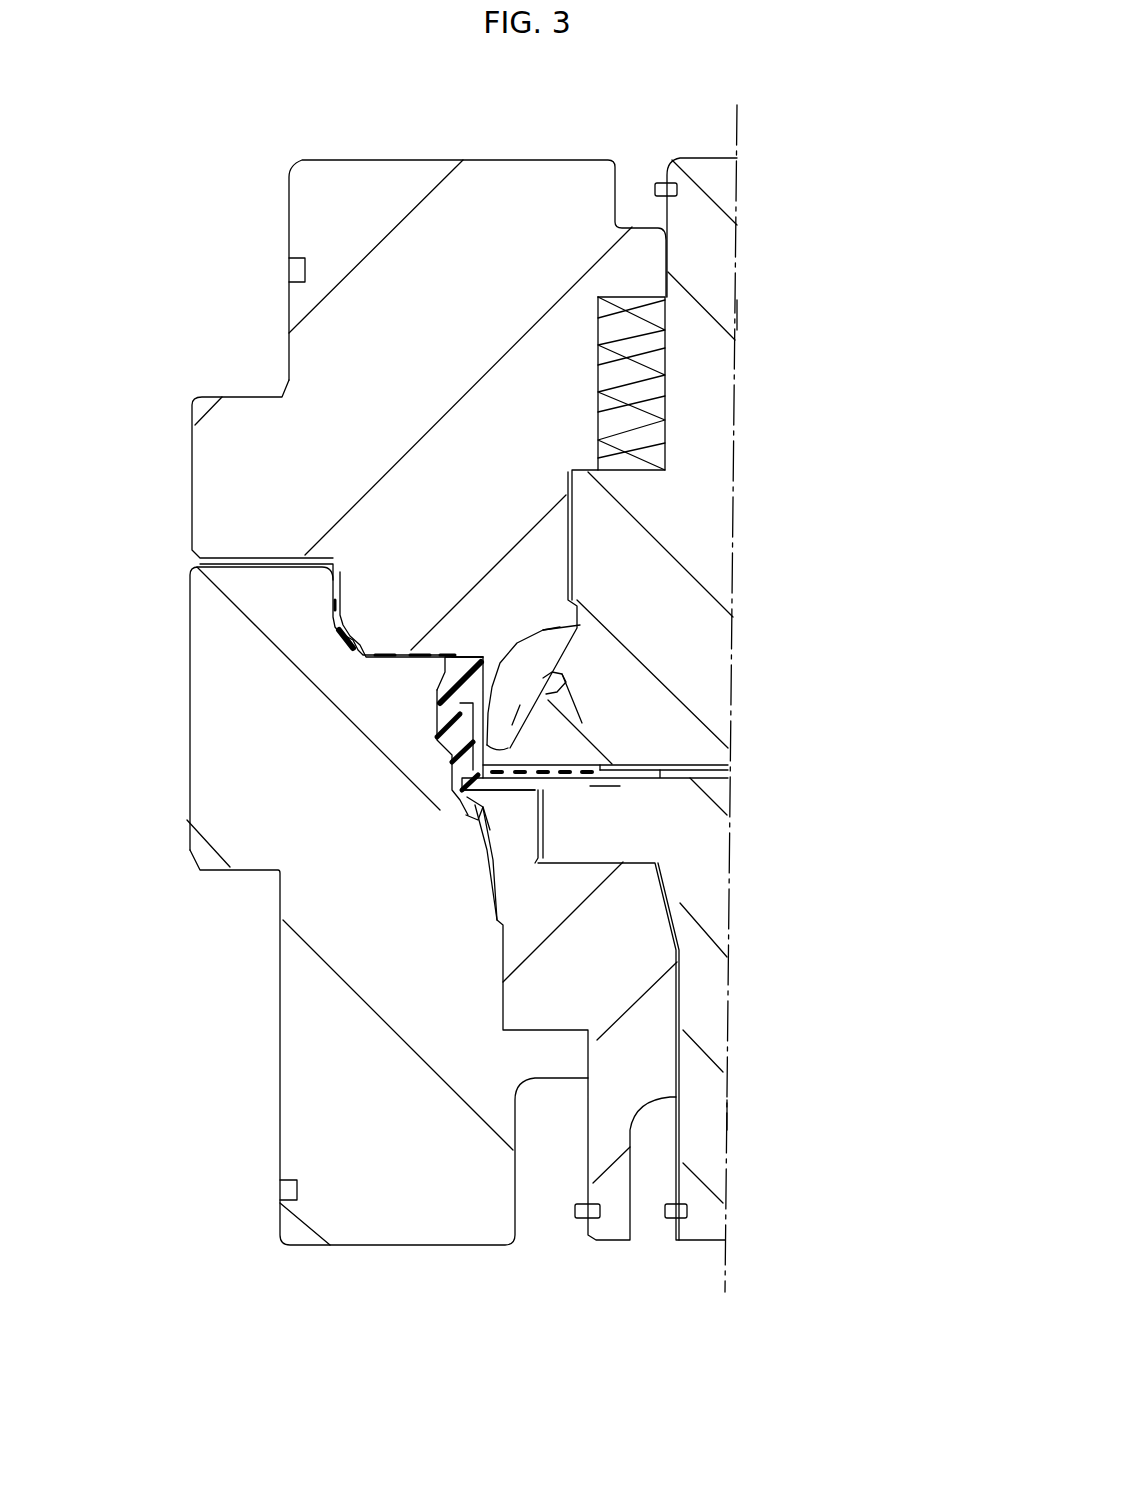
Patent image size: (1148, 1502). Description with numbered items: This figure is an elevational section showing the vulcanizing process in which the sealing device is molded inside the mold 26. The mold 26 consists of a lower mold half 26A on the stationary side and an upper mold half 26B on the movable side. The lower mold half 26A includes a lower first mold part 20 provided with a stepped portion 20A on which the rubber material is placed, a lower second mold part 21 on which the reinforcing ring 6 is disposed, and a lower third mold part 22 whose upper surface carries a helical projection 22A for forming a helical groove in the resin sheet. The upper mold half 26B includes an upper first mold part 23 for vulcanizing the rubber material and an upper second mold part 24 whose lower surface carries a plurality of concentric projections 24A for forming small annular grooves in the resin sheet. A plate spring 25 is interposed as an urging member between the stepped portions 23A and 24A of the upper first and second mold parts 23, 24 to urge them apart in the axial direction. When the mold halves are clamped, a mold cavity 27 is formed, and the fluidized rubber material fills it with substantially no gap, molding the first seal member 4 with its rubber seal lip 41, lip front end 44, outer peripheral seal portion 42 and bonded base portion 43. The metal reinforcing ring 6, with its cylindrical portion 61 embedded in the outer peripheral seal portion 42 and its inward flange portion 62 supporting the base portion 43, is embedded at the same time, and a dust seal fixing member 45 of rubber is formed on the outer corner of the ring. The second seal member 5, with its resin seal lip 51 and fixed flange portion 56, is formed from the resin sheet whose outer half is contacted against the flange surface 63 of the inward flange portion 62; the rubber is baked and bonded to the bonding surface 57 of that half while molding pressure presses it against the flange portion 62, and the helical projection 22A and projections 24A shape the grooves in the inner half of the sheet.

The upper first mold part 23 is at (500, 178).
The stepped portion 23A is at (667, 317).
The plate spring 25 is at (598, 373).
The mold 26 is at (754, 545).
The upper mold half 26B is at (744, 368).
The lower mold half 26A is at (737, 1138).
The upper second mold part 24 is at (713, 444).
The projections 24A is at (638, 470).
The lower first mold part 20 is at (405, 1226).
The stepped portion 20A is at (338, 640).
The lower second mold part 21 is at (612, 1230).
The lower third mold part 22 is at (698, 1230).
The helical projection 22A is at (550, 778).
The first seal member 4 is at (467, 652).
The mold cavity 27 is at (543, 632).
The bonded base portion 43 is at (490, 672).
The lip front end 44 is at (540, 714).
The rubber seal lip 41 is at (512, 737).
The cylindrical portion 61 is at (447, 712).
The outer peripheral seal portion 42 is at (447, 733).
The fixed flange portion 56 is at (475, 790).
The dust seal fixing member 45 is at (485, 808).
The second seal member 5 is at (497, 812).
The bonding surface 57 is at (538, 716).
The flange surface 63 is at (595, 785).
The resin seal lip 51 is at (575, 785).
The inward flange portion 62 is at (540, 805).
The reinforcing ring 6 is at (490, 820).